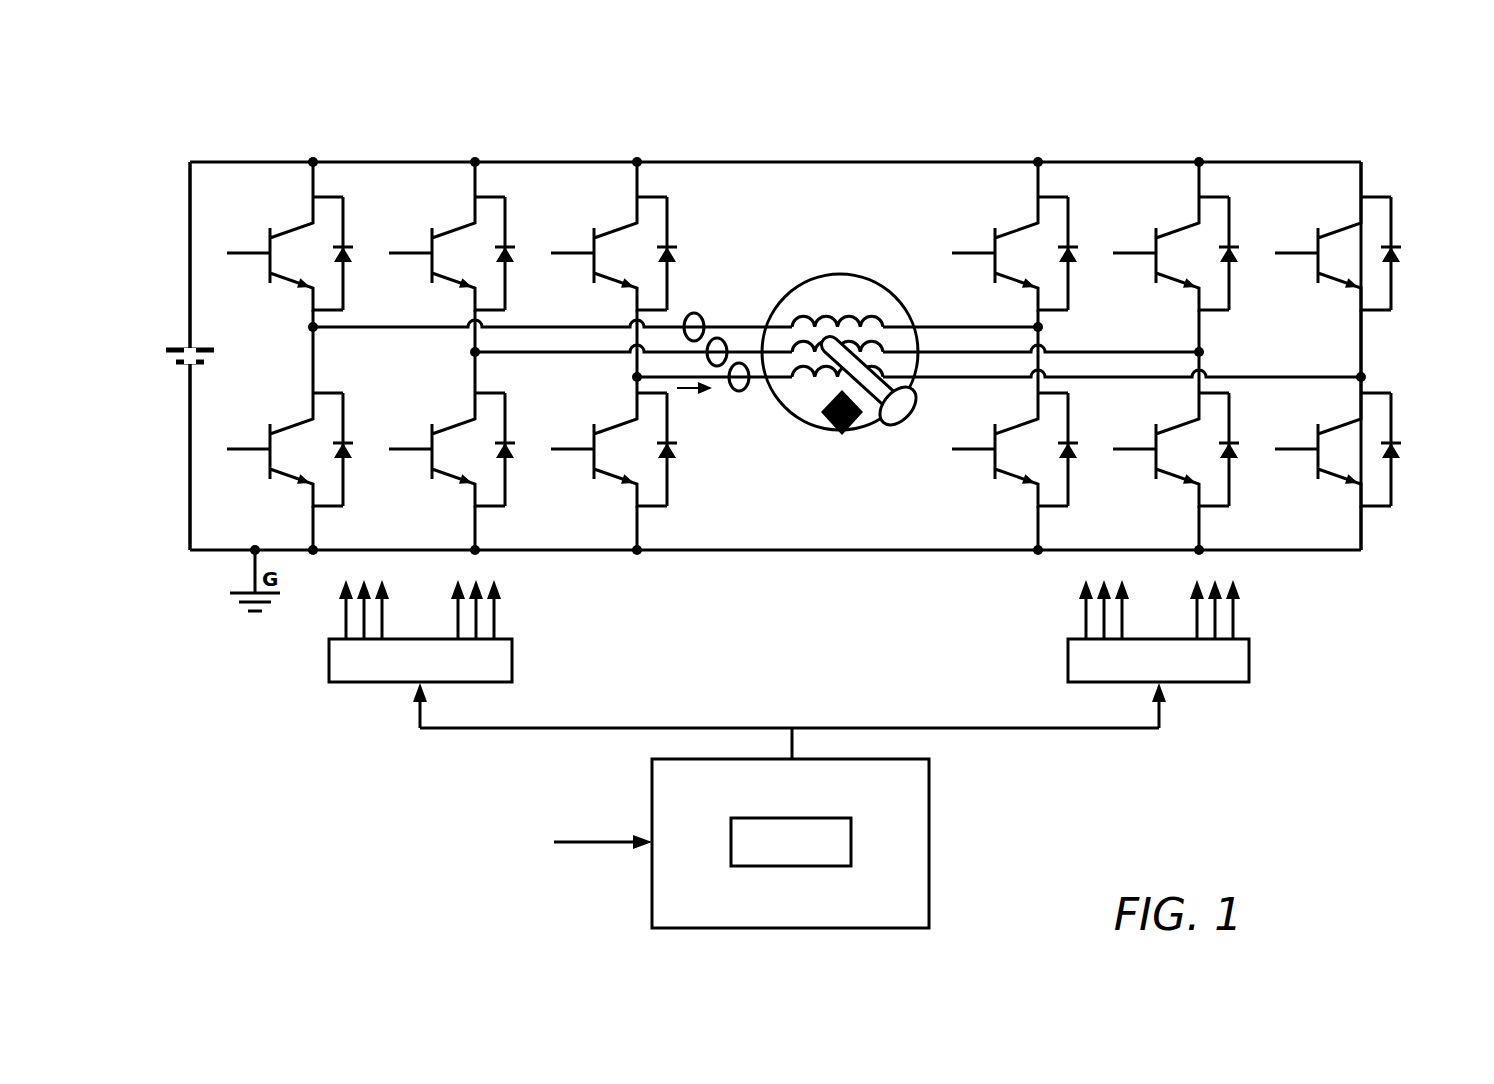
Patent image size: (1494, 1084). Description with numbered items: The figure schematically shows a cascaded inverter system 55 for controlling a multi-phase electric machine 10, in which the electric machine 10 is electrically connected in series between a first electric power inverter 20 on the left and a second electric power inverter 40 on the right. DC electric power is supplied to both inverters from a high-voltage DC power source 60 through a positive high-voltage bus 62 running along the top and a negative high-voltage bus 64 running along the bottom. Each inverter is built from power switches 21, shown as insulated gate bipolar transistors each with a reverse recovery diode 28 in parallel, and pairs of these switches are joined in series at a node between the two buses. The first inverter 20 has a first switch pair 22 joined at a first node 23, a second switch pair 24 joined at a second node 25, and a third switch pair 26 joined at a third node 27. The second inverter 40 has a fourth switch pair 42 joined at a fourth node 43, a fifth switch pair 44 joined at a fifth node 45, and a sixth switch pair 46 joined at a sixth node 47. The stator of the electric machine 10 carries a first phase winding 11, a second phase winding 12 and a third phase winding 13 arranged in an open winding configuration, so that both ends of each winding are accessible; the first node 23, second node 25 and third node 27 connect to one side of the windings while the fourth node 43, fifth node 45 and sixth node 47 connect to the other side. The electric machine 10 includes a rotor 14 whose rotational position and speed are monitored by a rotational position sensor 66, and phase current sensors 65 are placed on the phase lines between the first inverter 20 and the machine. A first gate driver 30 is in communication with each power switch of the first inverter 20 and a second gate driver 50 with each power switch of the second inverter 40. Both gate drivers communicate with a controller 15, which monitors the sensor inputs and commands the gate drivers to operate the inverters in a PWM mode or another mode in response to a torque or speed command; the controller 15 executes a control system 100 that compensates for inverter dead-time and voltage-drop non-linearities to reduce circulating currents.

The cascaded inverter system 55 is at (194, 131).
The first electric power inverter 20 is at (463, 318).
The second electric power inverter 40 is at (1204, 317).
The positive high-voltage bus 62 is at (848, 162).
The negative high-voltage bus 64 is at (862, 551).
The high-voltage DC power source 60 is at (178, 358).
The power switch 21 is at (266, 278).
The first switch pair 22 is at (304, 356).
The reverse recovery diode 28 is at (346, 258).
The first node 23 is at (318, 330).
The second switch pair 24 is at (478, 245).
The second node 25 is at (473, 354).
The third switch pair 26 is at (640, 245).
The third node 27 is at (633, 379).
The fourth switch pair 42 is at (1041, 245).
The fourth node 43 is at (1042, 327).
The fifth switch pair 44 is at (1202, 245).
The fifth node 45 is at (1203, 352).
The sixth switch pair 46 is at (1364, 245).
The sixth node 47 is at (1366, 377).
The multi-phase electric machine 10 is at (849, 335).
The first phase winding 11 is at (836, 318).
The second phase winding 12 is at (880, 345).
The third phase winding 13 is at (830, 366).
The rotor 14 is at (892, 425).
The rotational position sensor 66 is at (822, 430).
The phase current sensors 65 is at (745, 363).
The first gate driver 30 is at (420, 631).
The second gate driver 50 is at (1158, 631).
The controller 15 is at (837, 843).
The control system 100 is at (791, 842).